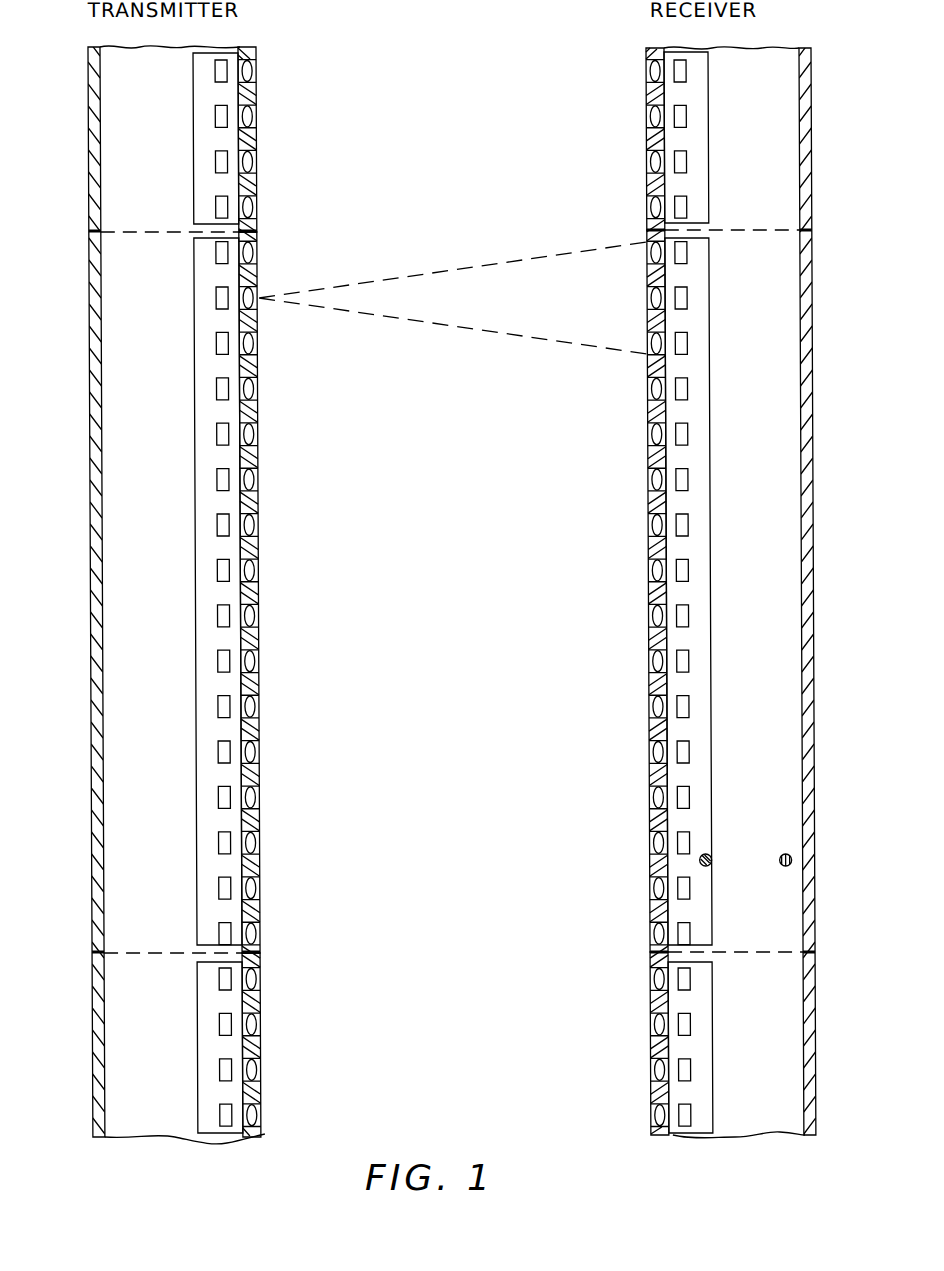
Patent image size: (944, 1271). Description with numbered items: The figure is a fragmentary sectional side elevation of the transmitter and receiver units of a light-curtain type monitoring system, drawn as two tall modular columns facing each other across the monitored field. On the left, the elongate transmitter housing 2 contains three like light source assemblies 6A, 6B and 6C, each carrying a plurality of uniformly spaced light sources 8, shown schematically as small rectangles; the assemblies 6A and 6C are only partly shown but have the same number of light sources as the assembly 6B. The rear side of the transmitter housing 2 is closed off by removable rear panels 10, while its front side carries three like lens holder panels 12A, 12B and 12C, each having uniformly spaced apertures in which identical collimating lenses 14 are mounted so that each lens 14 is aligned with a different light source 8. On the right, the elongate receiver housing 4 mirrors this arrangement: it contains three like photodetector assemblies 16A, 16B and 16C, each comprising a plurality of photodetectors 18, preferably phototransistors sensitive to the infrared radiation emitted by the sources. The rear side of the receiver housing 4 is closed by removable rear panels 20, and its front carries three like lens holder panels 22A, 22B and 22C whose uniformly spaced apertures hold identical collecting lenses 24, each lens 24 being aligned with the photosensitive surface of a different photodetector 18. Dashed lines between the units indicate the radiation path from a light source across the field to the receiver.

The transmitter housing 2 is at (86, 585).
The receiver housing 4 is at (813, 684).
The light source assembly 6A is at (186, 122).
The light source assembly 6B is at (190, 437).
The light source assembly 6C is at (190, 1000).
The light sources 8 is at (215, 197).
The rear panels 10 is at (88, 173).
The lens holder panel 12A is at (262, 93).
The lens holder panel 12B is at (262, 680).
The lens holder panel 12C is at (264, 1002).
The collimating lenses 14 is at (256, 208).
The photodetector assembly 16A is at (714, 155).
The photodetector assembly 16B is at (716, 410).
The photodetector assembly 16C is at (716, 1080).
The photodetectors 18 is at (686, 117).
The rear panels 20 is at (811, 190).
The lens holder panel 22A is at (643, 136).
The lens holder panel 22B is at (643, 505).
The lens holder panel 22C is at (643, 997).
The collecting lenses 24 is at (648, 117).